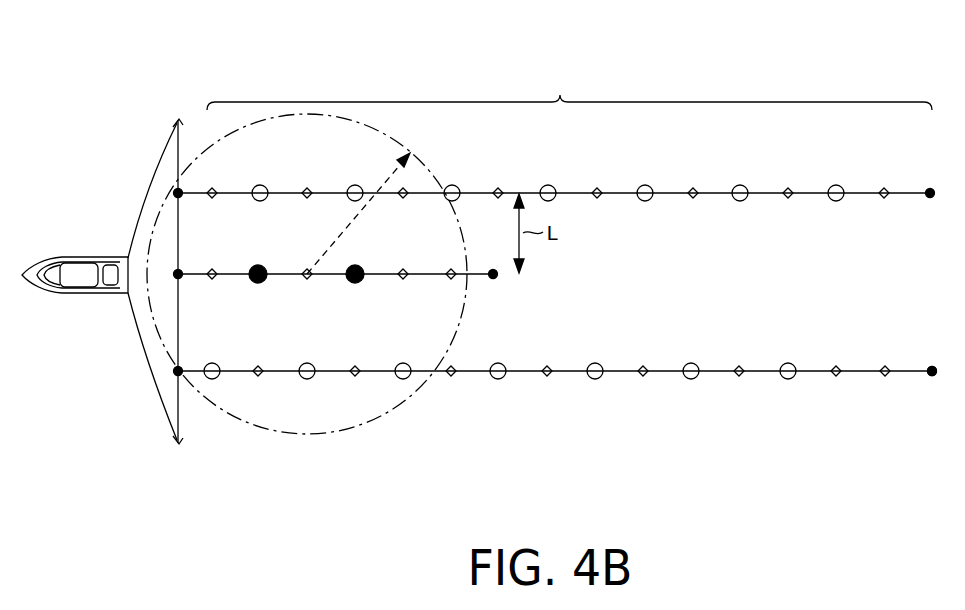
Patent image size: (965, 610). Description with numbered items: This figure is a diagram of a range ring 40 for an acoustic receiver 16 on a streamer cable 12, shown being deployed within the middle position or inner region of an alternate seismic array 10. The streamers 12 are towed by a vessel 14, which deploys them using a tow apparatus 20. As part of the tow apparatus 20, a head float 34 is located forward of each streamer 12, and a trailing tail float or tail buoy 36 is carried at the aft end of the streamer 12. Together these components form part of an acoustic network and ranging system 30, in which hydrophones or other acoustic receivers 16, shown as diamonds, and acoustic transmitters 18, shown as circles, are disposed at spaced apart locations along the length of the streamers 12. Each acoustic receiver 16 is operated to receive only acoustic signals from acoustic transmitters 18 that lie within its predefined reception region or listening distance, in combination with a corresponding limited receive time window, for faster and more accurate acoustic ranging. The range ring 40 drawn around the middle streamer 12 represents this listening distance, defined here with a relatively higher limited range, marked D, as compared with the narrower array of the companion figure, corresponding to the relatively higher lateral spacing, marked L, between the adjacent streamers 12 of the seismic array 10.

The towed seismic array 10 is at (557, 241).
The streamer 12 is at (625, 197).
The vessel 14 is at (80, 257).
The acoustic receiver 16 is at (309, 278).
The acoustic transmitter 18 is at (362, 279).
The tow apparatus 20 is at (145, 338).
The acoustic network and ranging system 30 is at (150, 82).
The head float 34 is at (181, 374).
The tail float 36 is at (930, 374).
The range ring 40 is at (437, 177).